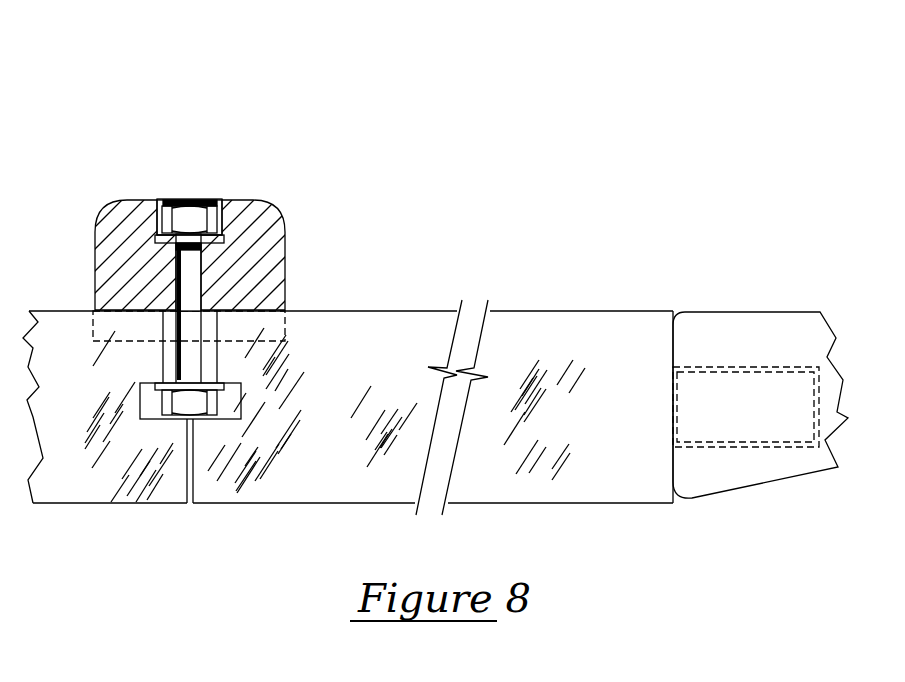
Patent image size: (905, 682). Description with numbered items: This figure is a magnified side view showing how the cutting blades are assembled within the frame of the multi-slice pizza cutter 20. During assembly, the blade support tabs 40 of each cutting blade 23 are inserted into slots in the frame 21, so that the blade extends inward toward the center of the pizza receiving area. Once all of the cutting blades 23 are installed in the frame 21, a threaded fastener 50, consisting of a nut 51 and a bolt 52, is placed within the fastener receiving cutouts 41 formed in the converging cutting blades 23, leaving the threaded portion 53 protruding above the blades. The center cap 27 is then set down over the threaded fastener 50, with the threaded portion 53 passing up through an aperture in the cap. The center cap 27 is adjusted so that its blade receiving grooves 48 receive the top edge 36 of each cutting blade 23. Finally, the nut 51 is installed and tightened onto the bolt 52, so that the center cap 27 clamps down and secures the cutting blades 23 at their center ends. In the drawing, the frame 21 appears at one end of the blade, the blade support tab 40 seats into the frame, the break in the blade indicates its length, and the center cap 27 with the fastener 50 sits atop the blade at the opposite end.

The pizza cutter 20 is at (122, 122).
The frame 21 is at (775, 325).
The cutting blade 23 is at (53, 325).
The center cap 27 is at (110, 225).
The top edge 36 is at (432, 310).
The blade support tab 40 is at (717, 393).
The fastener receiving cutout 41 is at (150, 407).
The blade receiving groove 48 is at (287, 332).
The threaded fastener 50 is at (190, 205).
The nut 51 is at (205, 207).
The bolt 52 is at (190, 303).
The threaded portion 53 is at (207, 245).